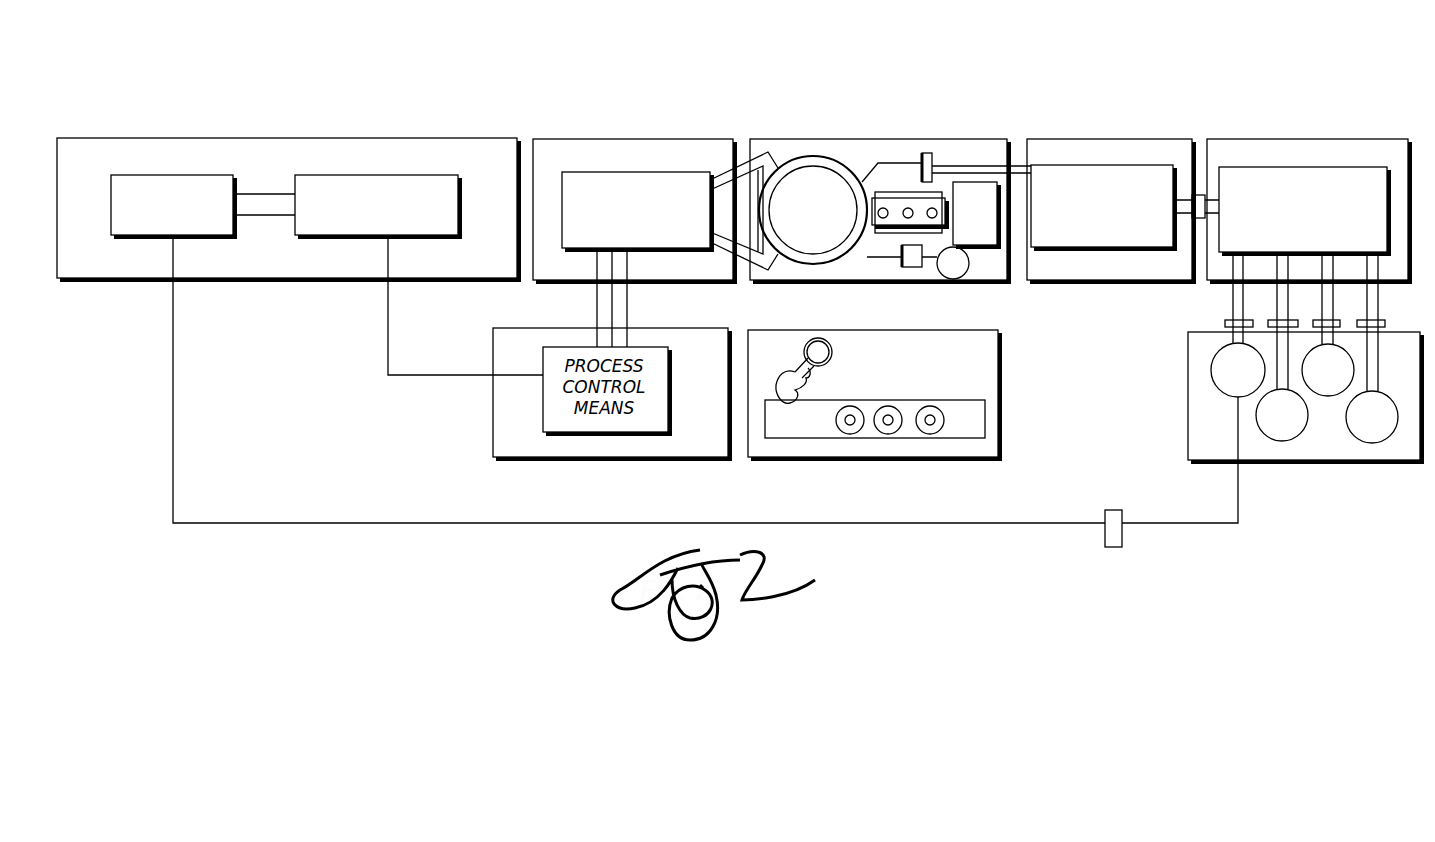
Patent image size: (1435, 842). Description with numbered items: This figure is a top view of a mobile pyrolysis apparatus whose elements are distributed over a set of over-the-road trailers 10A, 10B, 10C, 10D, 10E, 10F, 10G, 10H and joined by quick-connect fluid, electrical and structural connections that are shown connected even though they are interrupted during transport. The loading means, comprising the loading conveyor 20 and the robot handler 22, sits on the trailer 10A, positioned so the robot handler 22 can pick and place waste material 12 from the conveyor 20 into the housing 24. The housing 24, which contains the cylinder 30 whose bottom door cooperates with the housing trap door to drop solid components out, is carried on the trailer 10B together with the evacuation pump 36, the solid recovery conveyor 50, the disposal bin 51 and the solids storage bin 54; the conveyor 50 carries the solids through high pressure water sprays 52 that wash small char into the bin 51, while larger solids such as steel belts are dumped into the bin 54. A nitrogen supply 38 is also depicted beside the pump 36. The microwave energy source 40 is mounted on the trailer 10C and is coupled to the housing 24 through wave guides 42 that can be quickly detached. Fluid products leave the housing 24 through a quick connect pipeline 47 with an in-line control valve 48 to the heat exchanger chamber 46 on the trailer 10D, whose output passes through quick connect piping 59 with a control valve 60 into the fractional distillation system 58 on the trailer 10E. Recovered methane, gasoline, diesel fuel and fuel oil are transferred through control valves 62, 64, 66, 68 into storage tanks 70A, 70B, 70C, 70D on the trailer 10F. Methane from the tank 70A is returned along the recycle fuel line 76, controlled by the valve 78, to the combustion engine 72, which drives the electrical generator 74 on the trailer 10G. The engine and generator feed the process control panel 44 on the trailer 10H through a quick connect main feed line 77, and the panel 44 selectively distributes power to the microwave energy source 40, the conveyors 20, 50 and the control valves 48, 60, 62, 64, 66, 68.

The trailer 10A is at (768, 448).
The trailer 10B is at (808, 282).
The trailer 10C is at (566, 152).
The trailer 10D is at (1072, 153).
The trailer 10E is at (1358, 158).
The trailer 10F is at (1211, 448).
The trailer 10G is at (270, 155).
The trailer 10H is at (683, 445).
The waste material 12 is at (927, 434).
The loading conveyor 20 is at (960, 430).
The robot handler 22 is at (810, 374).
The housing 24 is at (805, 157).
The cylinder 30 is at (834, 176).
The evacuation pump 36 is at (908, 268).
The nitrogen gas source 38 is at (968, 280).
The microwave energy source 40 is at (626, 177).
The wave guides 42 is at (730, 240).
The process control panel 44 is at (582, 428).
The heat exchanger chamber 46 is at (1147, 175).
The quick connect pipeline 47 is at (1016, 165).
The in-line control valve 48 is at (932, 160).
The solid recovery conveyor 50 is at (883, 208).
The disposal bin 51 is at (885, 232).
The high pressure water sprays 52 is at (910, 208).
The solids storage bin 54 is at (980, 232).
The fractional distillation system 58 is at (1305, 175).
The quick connect piping 59 is at (1212, 203).
The control valve 60 is at (1198, 195).
The control valve 62 is at (1225, 324).
The control valve 64 is at (1235, 330).
The control valve 66 is at (1338, 325).
The control valve 68 is at (1387, 330).
The storage tank 70A is at (1222, 378).
The storage tank 70B is at (1268, 423).
The storage tank 70C is at (1330, 382).
The storage tank 70D is at (1375, 428).
The combustion engine 72 is at (140, 180).
The electrical generator 74 is at (375, 183).
The recycle fuel line 76 is at (1240, 498).
The quick connect main feed line 77 is at (385, 335).
The valve 78 is at (1115, 520).